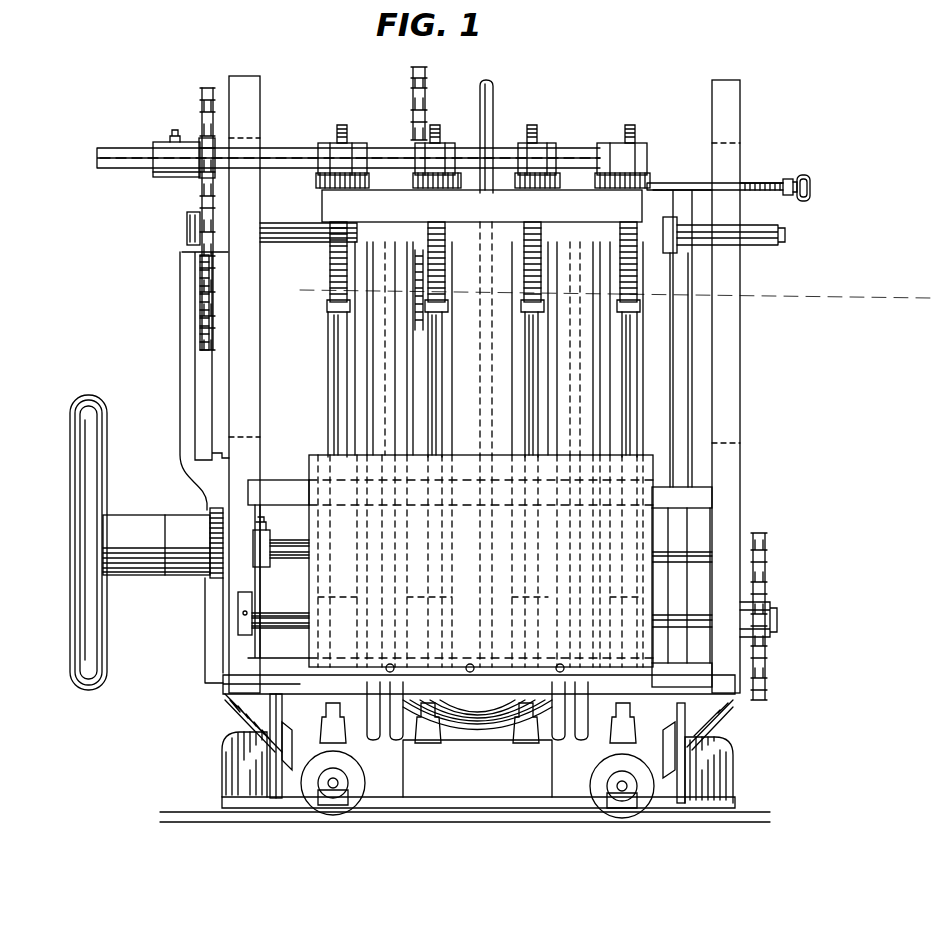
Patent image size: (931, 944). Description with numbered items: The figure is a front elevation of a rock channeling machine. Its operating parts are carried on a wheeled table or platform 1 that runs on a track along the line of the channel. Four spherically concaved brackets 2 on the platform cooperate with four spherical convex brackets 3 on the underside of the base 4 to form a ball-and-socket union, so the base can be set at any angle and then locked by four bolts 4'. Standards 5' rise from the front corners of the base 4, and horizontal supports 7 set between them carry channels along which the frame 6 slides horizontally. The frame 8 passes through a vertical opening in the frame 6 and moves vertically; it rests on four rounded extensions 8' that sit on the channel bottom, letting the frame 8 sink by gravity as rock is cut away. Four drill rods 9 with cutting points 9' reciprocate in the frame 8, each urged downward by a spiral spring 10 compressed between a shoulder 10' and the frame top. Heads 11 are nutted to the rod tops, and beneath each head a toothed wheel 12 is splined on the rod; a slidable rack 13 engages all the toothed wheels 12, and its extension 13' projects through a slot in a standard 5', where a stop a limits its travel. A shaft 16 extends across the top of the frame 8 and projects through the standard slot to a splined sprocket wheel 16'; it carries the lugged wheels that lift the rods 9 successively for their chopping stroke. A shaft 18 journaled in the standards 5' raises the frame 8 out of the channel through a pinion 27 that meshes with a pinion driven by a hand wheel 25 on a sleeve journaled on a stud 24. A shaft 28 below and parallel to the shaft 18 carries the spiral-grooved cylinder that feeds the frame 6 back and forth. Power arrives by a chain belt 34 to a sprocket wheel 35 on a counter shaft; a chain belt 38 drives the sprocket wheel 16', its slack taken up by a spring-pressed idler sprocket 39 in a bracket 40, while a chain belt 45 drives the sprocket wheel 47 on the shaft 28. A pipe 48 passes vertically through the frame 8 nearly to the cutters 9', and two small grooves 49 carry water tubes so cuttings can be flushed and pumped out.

The table or platform 1 is at (440, 810).
The spherically concaved supports or brackets 2 is at (477, 767).
The spherical convex supports or brackets 3 is at (690, 716).
The base 4 is at (447, 696).
The rods or bolts 4' is at (478, 825).
The standards or supports 5' is at (484, 384).
The frame 6 is at (481, 563).
The horizontal supports 7 is at (682, 585).
The frame 8 is at (521, 364).
The rods or extensions 8' is at (477, 728).
The drill rods 9 is at (478, 384).
The tools or points 9' is at (478, 749).
The spiral springs 10 is at (477, 262).
The shoulders 10' is at (479, 305).
The heads 11 is at (650, 175).
The toothed wheel 12 is at (645, 196).
The slidable rack 13 is at (715, 167).
The extension 13' is at (766, 165).
The stop a is at (800, 172).
The shaft 16 is at (348, 147).
The sprocket wheel 16' is at (185, 129).
The shaft 18 is at (288, 555).
The stud 24 is at (156, 545).
The hand wheel 25 is at (75, 470).
The pinion 27 is at (212, 578).
The shaft 28 is at (285, 622).
The chain belt 34 is at (411, 80).
The sprocket wheel 35 is at (415, 105).
The chain belt 38 is at (200, 198).
The spring-pressed idler sprocket wheel 39 is at (198, 278).
The bracket 40 is at (183, 326).
The chain belt 45 is at (768, 546).
The sprocket wheel 47 is at (768, 600).
The pipe or tube 48 is at (495, 100).
The small grooves 49 is at (600, 346).